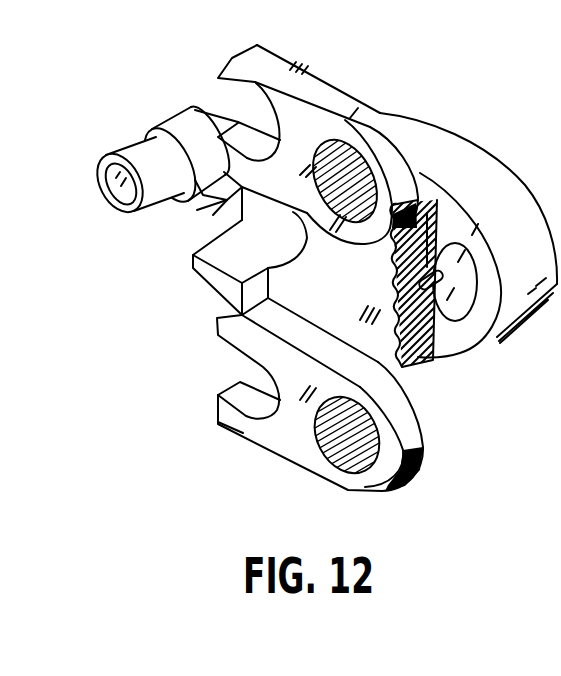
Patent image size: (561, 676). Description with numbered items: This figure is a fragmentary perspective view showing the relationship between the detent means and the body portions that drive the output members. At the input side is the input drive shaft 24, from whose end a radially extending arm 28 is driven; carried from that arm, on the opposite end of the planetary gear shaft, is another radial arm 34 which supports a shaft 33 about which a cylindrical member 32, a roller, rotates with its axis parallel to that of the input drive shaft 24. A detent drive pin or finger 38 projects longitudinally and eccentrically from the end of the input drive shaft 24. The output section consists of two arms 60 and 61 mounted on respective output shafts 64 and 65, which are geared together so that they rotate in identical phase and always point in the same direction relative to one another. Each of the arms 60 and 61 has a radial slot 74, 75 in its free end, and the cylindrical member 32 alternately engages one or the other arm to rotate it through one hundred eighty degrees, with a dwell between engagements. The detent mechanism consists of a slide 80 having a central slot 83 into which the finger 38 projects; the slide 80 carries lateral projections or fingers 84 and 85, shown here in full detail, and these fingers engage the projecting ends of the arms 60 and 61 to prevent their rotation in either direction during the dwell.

The input drive shaft 24 is at (453, 307).
The radially extending arm 28 is at (460, 153).
The cylindrical member 32 is at (121, 153).
The shaft 33 is at (130, 198).
The radial arm 34 is at (187, 133).
The detent drive pin or finger 38 is at (444, 272).
The arm 60 is at (318, 90).
The arm 61 is at (284, 447).
The output shaft 64 is at (340, 157).
The output shaft 65 is at (348, 492).
The radial slot 74 is at (225, 105).
The radial slot 75 is at (218, 395).
The slide 80 is at (356, 288).
The central slot 83 is at (410, 360).
The lateral projection or finger 84 is at (228, 200).
The lateral projection or finger 85 is at (228, 290).